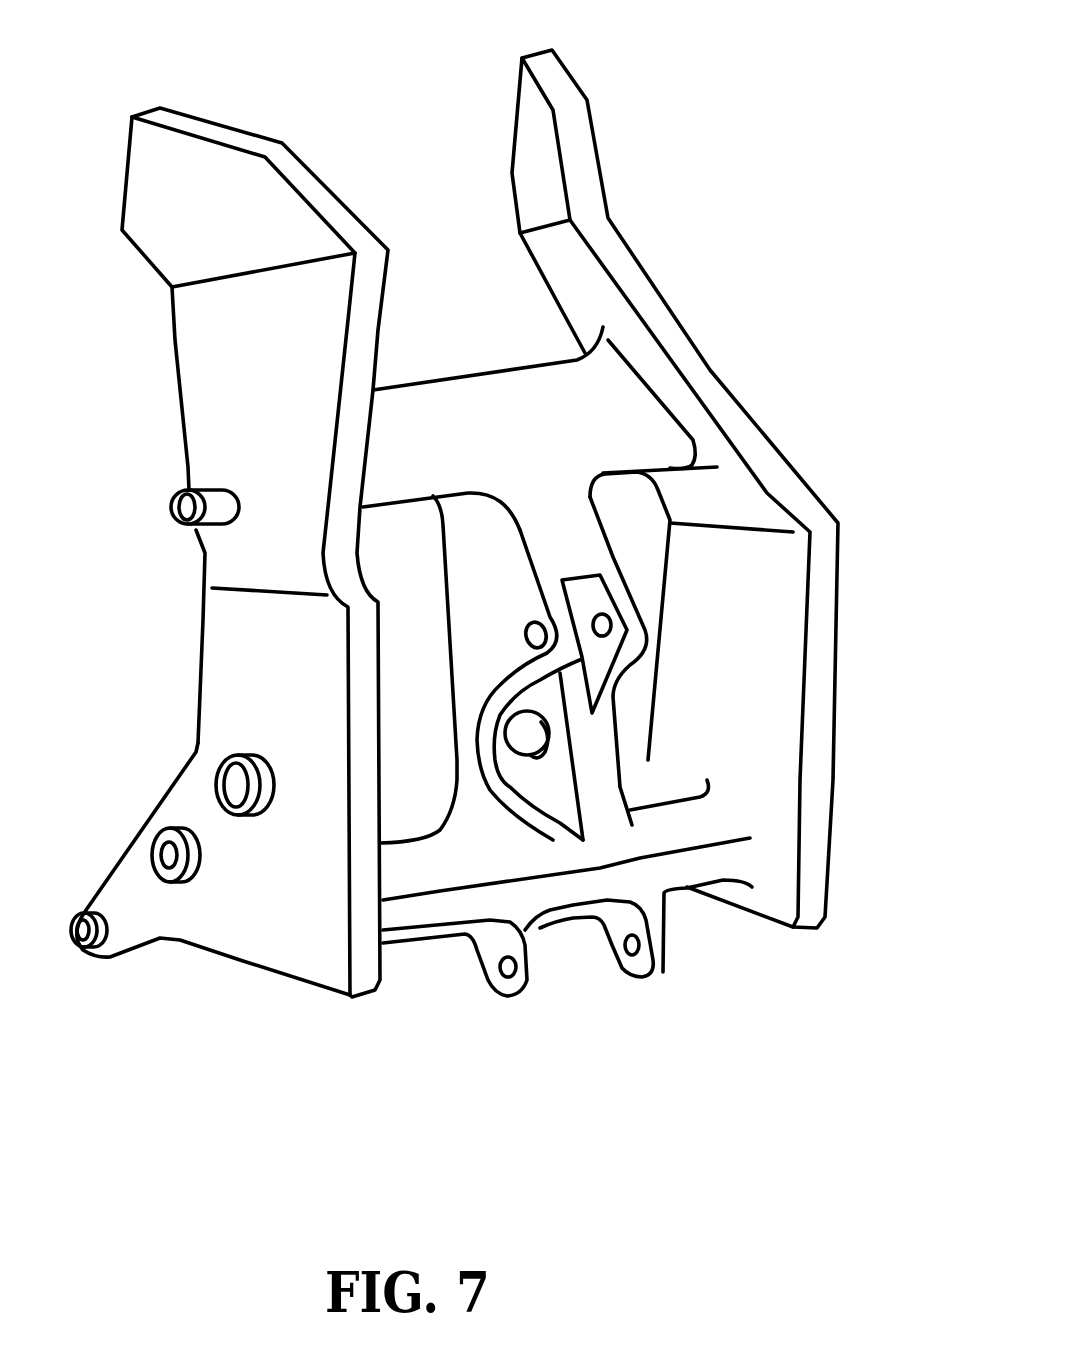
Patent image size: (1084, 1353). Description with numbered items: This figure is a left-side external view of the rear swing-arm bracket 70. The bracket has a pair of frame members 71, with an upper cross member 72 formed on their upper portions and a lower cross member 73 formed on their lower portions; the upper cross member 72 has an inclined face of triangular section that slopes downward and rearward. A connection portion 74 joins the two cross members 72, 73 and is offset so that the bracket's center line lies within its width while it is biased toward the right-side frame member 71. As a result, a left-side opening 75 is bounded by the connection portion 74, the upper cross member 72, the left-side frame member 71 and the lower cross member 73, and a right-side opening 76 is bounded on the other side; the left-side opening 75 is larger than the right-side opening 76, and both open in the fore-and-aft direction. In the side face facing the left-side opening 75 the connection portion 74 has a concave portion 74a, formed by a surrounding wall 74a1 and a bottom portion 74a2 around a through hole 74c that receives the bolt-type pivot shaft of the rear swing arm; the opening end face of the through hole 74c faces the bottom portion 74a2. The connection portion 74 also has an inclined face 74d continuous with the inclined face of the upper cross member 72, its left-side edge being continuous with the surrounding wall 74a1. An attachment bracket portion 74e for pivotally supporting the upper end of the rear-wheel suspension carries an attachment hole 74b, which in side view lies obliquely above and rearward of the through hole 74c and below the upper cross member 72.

The rear swing-arm bracket 70 is at (640, 117).
The frame member 71 is at (200, 337).
The upper cross member 72 is at (483, 397).
The lower cross member 73 is at (672, 872).
The connection portion 74 is at (473, 562).
The concave portion 74a is at (473, 786).
The surrounding wall 74a1 is at (500, 818).
The bottom portion 74a2 is at (552, 803).
The attachment hole 74b is at (527, 636).
The through hole 74c is at (505, 740).
The inclined face 74d is at (557, 527).
The attachment bracket portion 74e is at (627, 602).
The left-side opening 75 is at (383, 570).
The right-side opening 76 is at (620, 525).